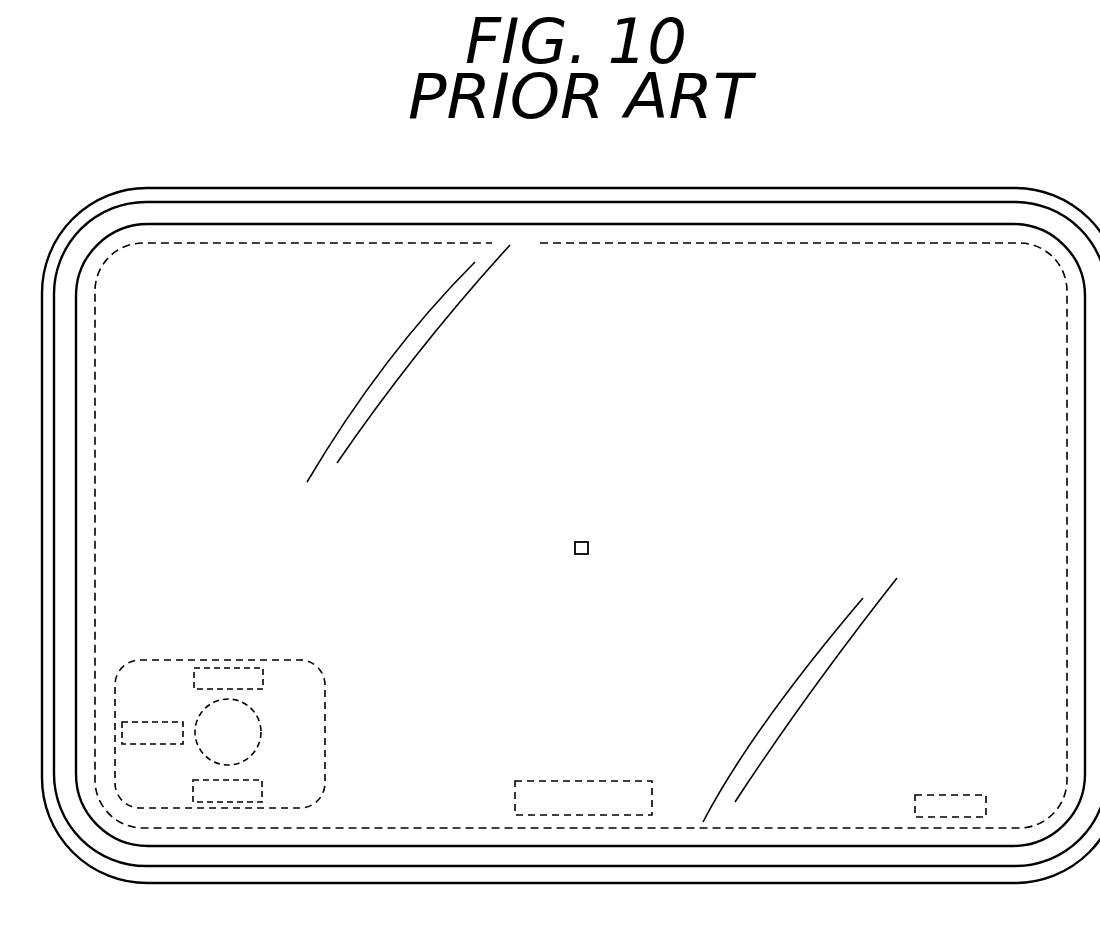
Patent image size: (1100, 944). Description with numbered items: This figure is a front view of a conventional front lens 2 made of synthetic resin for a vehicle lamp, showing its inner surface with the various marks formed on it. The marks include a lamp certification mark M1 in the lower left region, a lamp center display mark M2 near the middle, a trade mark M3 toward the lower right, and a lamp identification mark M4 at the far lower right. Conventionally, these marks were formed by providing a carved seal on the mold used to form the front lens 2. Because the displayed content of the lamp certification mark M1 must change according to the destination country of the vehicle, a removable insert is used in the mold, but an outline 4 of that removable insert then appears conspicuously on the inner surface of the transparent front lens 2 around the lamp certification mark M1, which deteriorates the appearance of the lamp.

The front lens 2 is at (811, 171).
The outline of the removable insert 4 is at (192, 660).
The lamp certification mark M1 is at (265, 671).
The lamp center display mark M2 is at (588, 541).
The trade mark M3 is at (621, 778).
The lamp identification mark M4 is at (946, 791).